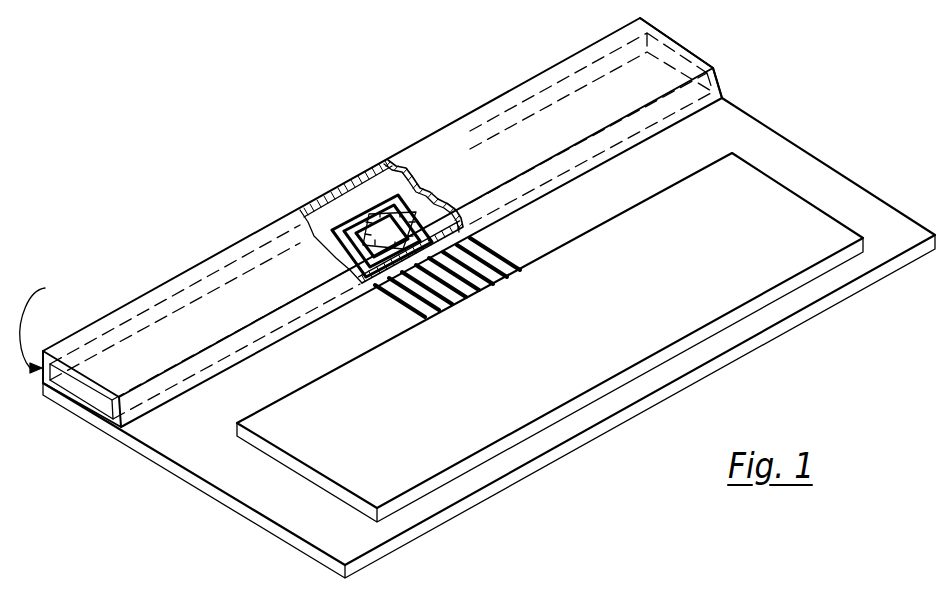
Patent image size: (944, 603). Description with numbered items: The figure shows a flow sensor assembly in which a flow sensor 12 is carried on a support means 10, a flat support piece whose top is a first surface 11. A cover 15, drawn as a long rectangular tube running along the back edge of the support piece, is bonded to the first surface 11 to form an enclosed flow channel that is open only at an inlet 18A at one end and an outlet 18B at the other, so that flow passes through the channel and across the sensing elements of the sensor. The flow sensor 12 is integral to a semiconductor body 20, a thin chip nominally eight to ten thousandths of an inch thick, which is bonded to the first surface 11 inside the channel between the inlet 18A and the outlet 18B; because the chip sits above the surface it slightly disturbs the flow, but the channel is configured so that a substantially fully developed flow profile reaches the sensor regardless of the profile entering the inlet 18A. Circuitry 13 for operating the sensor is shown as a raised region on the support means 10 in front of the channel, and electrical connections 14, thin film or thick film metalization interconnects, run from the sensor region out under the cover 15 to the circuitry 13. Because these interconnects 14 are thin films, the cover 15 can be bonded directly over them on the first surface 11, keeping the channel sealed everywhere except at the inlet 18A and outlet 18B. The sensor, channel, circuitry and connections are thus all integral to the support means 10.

The support means 10 is at (268, 502).
The first surface 11 is at (723, 146).
The flow sensor 12 is at (387, 228).
The circuitry 13 is at (513, 389).
The electrical connections 14 is at (347, 258).
The cover 15 is at (41, 323).
The inlet 18A is at (82, 395).
The outlet 18B is at (686, 64).
The semiconductor body 20 is at (390, 229).